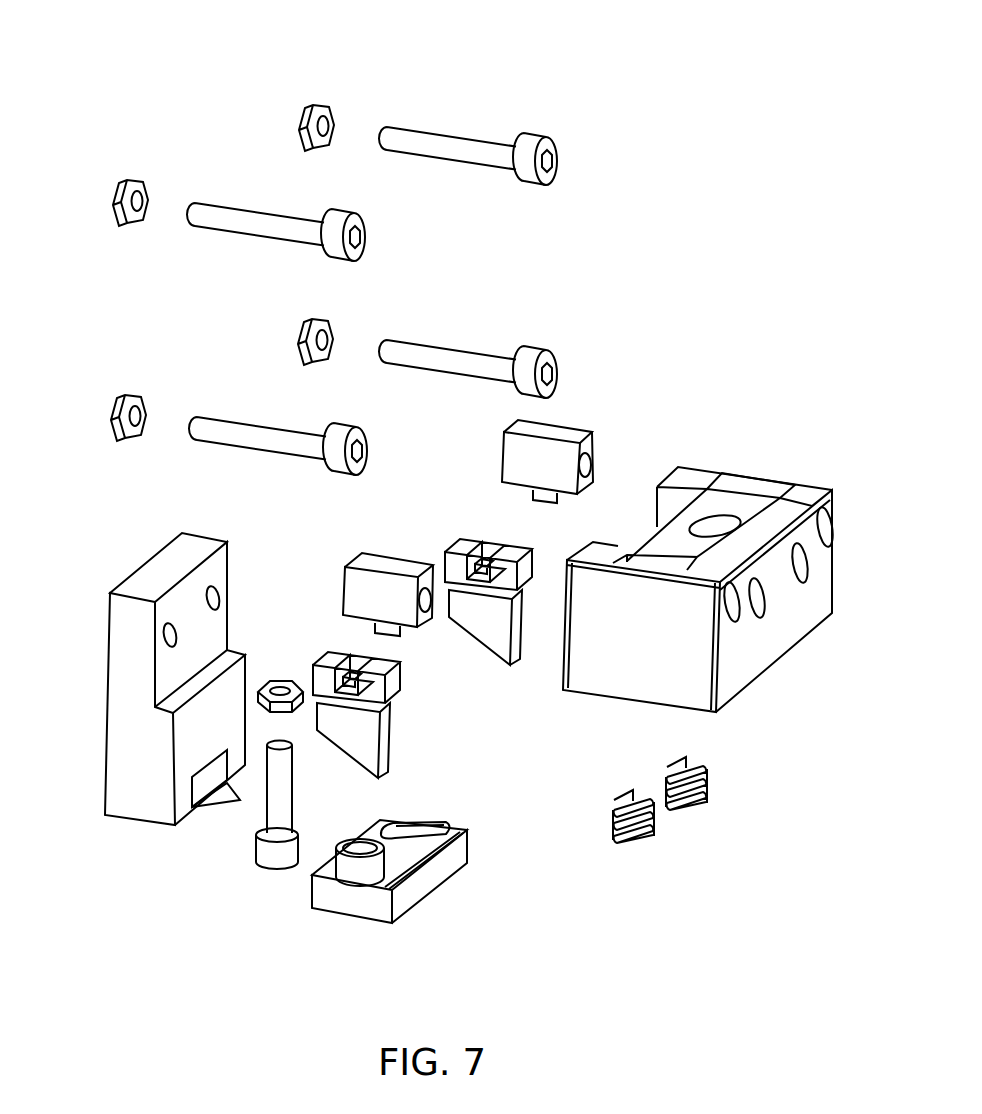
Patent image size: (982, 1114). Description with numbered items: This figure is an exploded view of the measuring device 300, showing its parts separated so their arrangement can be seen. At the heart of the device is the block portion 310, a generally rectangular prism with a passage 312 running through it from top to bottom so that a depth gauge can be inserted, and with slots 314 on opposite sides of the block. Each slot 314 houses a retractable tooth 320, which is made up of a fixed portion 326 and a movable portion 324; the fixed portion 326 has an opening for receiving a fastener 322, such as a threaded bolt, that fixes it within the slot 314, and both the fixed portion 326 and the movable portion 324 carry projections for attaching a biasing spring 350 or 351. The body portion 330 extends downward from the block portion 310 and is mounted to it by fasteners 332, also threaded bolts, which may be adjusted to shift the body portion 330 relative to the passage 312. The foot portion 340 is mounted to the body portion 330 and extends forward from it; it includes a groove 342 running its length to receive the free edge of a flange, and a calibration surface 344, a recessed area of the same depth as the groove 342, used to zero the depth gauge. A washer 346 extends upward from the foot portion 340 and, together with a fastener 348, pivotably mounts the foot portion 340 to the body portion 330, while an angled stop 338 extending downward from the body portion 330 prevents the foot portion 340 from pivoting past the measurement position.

The measuring device 300 is at (203, 52).
The block portion 310 is at (683, 460).
The passage 312 is at (720, 528).
The slots 314 is at (747, 478).
The retractable tooth 320 is at (387, 757).
The fasteners 322 is at (442, 143).
The movable portion 324 is at (388, 690).
The fixed portion 326 is at (378, 585).
The body portion 330 is at (118, 718).
The fasteners 332 is at (442, 355).
The stop 338 is at (232, 786).
The foot portion 340 is at (440, 895).
The groove 342 is at (385, 887).
The calibration surface 344 is at (410, 837).
The washer 346 is at (347, 870).
The fastener 348 is at (263, 847).
The spring 350 is at (655, 842).
The spring 351 is at (708, 808).